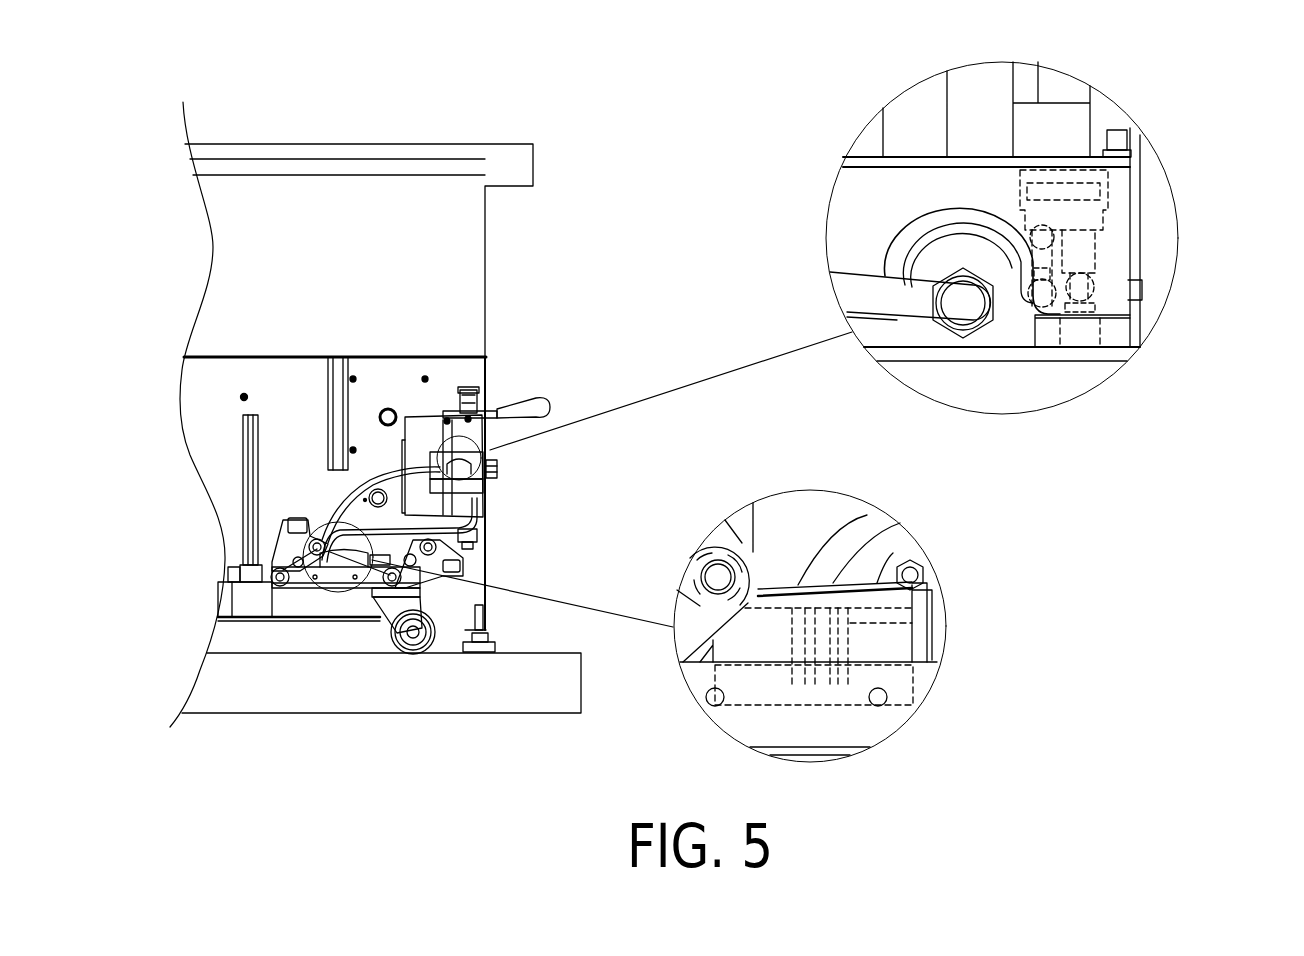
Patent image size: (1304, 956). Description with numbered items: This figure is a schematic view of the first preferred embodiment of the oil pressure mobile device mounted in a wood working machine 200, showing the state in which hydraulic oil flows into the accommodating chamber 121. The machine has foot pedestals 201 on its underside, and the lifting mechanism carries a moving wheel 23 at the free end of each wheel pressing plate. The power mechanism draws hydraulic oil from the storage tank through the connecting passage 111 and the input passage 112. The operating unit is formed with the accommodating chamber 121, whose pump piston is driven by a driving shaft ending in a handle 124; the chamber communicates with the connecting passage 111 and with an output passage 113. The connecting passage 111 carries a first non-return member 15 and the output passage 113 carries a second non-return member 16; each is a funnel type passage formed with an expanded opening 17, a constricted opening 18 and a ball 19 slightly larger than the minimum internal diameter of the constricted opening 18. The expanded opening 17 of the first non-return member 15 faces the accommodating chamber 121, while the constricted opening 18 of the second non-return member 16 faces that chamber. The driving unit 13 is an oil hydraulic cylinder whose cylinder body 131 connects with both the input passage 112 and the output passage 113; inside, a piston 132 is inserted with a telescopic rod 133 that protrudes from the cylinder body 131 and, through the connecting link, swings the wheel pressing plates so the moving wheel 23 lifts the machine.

The wood working machine 200 is at (364, 138).
The handle 124 is at (527, 372).
The moving wheel 23 is at (410, 655).
The foot pedestal 201 is at (477, 655).
The ball 19 is at (1045, 220).
The expanded opening 17 is at (1035, 300).
The constricted opening 18 is at (1033, 273).
The first non-return member 15 is at (985, 255).
The input passage 112 is at (848, 288).
The accommodating chamber 121 is at (1107, 202).
The second non-return member 16 is at (1090, 250).
The output passage 113 is at (1087, 332).
The connecting passage 111 is at (1037, 313).
The piston 132 is at (792, 617).
The driving unit 13 is at (868, 583).
The telescopic rod 133 is at (940, 632).
The cylinder body 131 is at (817, 707).